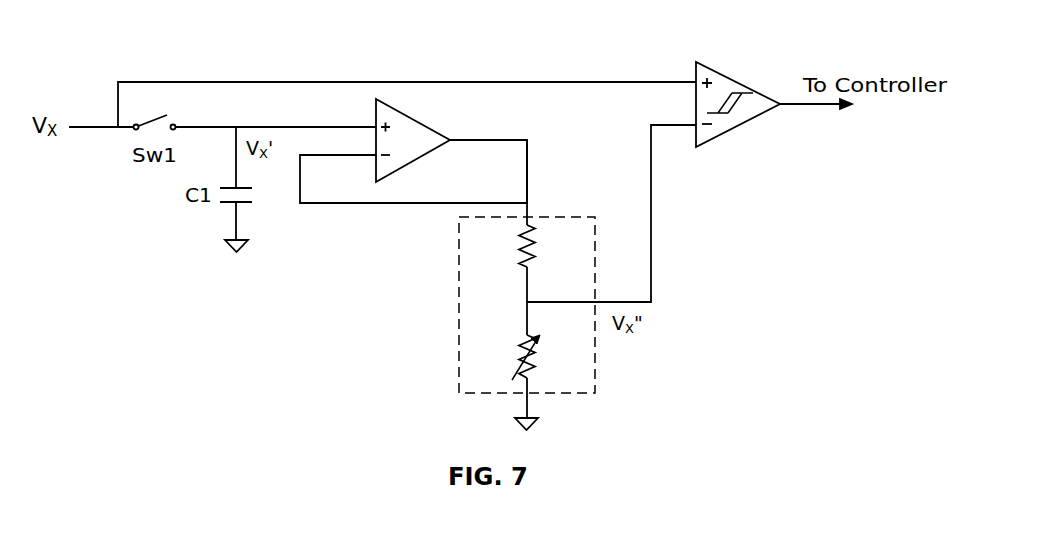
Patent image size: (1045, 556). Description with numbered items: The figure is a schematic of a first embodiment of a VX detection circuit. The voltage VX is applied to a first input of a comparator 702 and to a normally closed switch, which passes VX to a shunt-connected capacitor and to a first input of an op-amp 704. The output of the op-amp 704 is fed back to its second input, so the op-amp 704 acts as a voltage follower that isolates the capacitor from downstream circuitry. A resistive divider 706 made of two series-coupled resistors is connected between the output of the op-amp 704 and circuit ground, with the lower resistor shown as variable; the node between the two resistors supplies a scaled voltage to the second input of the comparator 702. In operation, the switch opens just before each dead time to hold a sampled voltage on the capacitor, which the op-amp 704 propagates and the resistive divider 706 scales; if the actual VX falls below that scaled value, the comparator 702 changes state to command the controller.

The comparator 702 is at (740, 80).
The op-amp 704 is at (405, 110).
The resistive divider 706 is at (458, 353).